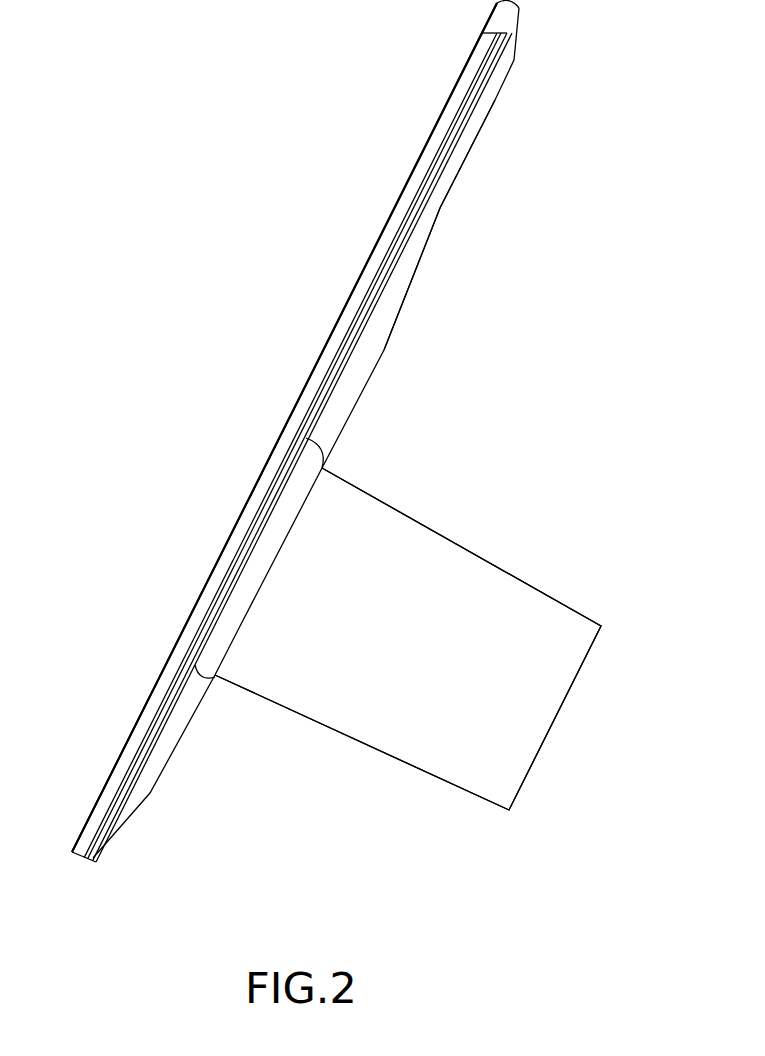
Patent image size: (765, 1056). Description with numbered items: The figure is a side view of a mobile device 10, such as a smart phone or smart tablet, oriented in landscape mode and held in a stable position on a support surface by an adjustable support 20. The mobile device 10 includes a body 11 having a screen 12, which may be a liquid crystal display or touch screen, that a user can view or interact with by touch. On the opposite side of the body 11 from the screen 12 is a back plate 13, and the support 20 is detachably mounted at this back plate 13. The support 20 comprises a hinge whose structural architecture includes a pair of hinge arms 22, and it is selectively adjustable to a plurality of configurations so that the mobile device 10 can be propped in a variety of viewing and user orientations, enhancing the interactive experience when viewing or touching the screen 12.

The mobile device 10 is at (110, 165).
The body 11 is at (440, 208).
The screen 12 is at (322, 352).
The back plate 13 is at (430, 280).
The support 20 is at (563, 590).
The hinge arms 22 is at (313, 688).